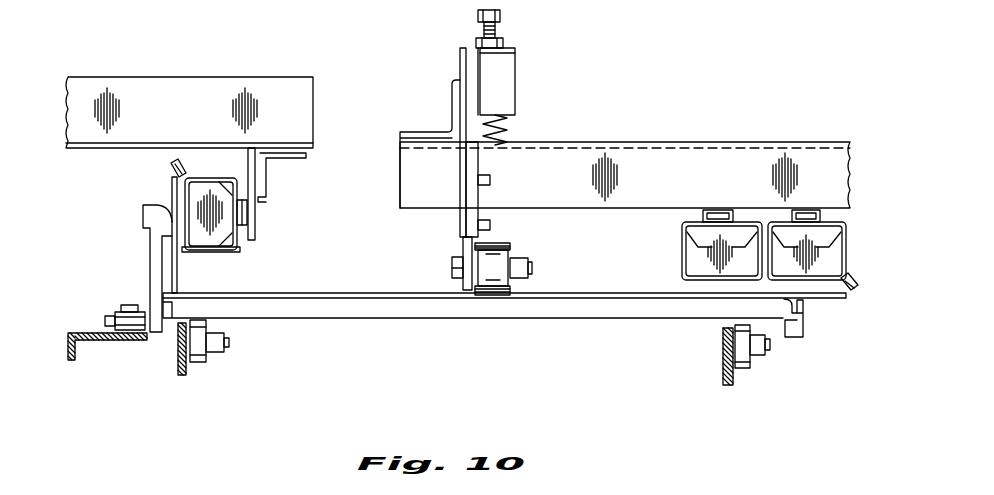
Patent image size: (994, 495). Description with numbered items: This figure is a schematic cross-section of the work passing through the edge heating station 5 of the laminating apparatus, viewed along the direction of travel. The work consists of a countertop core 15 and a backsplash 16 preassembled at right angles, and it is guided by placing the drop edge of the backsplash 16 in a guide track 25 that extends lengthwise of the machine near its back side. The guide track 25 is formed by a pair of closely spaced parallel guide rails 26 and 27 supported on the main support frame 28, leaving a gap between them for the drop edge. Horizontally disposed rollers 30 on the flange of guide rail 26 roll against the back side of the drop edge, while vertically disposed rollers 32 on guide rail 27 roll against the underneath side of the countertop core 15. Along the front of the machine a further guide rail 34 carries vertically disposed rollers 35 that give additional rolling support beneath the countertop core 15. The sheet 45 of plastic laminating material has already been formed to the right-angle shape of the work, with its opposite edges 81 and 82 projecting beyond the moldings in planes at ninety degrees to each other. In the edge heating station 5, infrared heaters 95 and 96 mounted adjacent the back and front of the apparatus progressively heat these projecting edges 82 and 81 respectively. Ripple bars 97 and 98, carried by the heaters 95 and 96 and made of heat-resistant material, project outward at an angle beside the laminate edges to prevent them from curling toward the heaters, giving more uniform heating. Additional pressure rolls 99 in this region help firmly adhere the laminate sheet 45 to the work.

The main support frame 28 is at (161, 84).
The edge heating station 5 is at (336, 128).
The ripple bar 97 is at (170, 166).
The edge of the laminate sheet 82 is at (172, 186).
The infrared heater 95 is at (266, 215).
The backsplash 16 is at (150, 239).
The rollers 30 is at (105, 315).
The guide rail 26 is at (92, 341).
The guide track 25 is at (145, 362).
The guide rail 27 is at (185, 374).
The rollers 32 is at (208, 360).
The sheet of plastic laminating material 45 is at (292, 294).
The countertop core 15 is at (359, 318).
The pressure rolls 99 is at (503, 247).
The infrared heater 96 is at (676, 256).
The edge of the laminate sheet 81 is at (827, 300).
The ripple bar 98 is at (859, 290).
The guide rail 34 is at (735, 383).
The rollers 35 is at (757, 365).